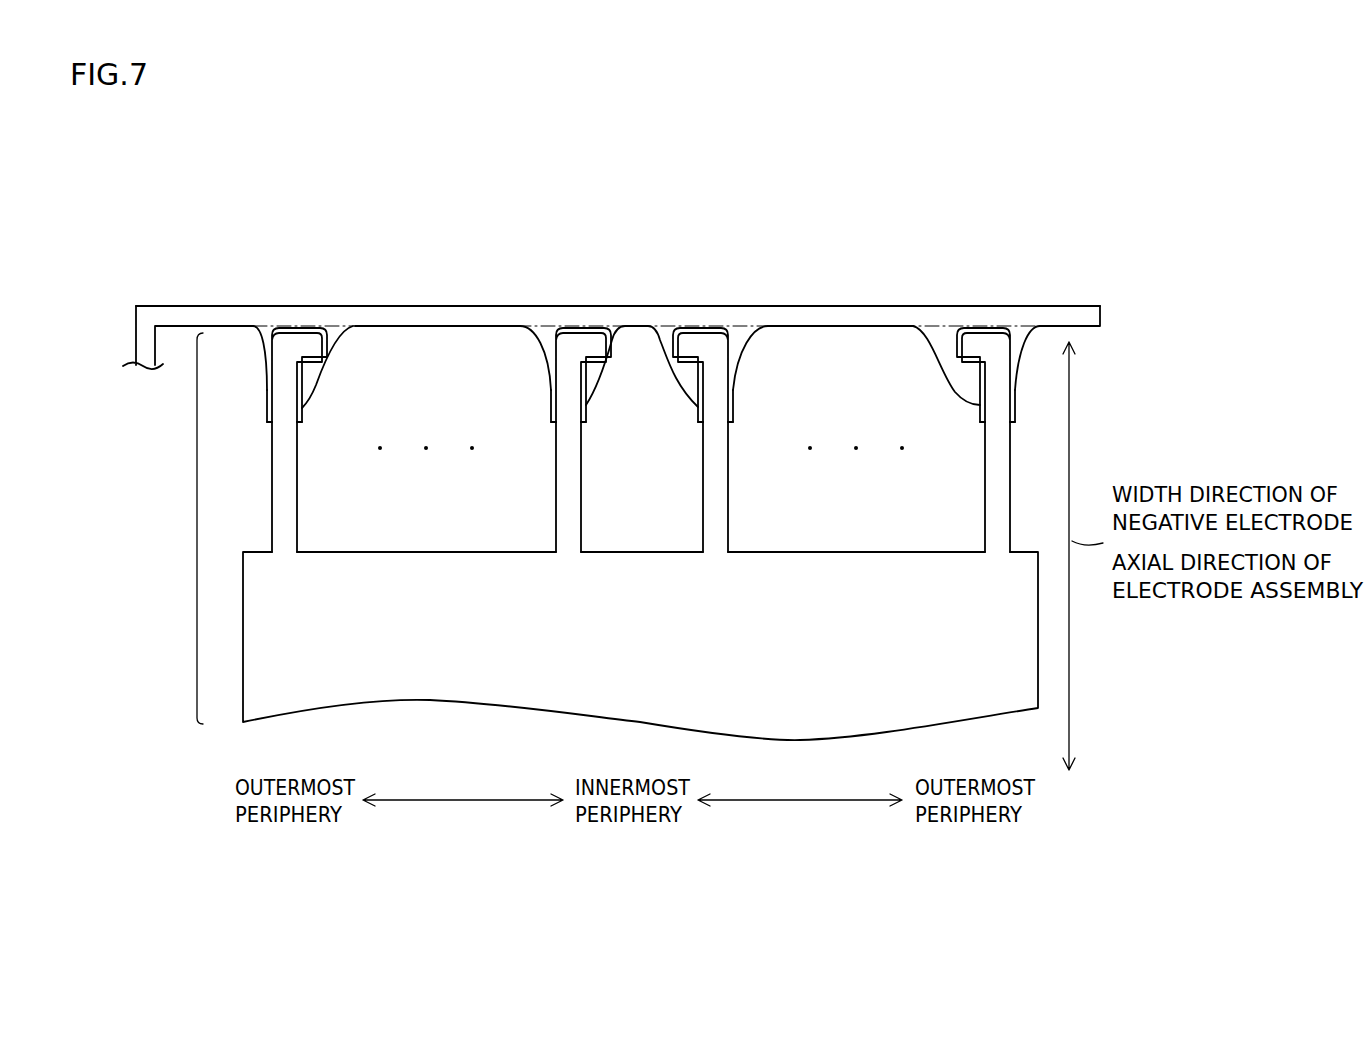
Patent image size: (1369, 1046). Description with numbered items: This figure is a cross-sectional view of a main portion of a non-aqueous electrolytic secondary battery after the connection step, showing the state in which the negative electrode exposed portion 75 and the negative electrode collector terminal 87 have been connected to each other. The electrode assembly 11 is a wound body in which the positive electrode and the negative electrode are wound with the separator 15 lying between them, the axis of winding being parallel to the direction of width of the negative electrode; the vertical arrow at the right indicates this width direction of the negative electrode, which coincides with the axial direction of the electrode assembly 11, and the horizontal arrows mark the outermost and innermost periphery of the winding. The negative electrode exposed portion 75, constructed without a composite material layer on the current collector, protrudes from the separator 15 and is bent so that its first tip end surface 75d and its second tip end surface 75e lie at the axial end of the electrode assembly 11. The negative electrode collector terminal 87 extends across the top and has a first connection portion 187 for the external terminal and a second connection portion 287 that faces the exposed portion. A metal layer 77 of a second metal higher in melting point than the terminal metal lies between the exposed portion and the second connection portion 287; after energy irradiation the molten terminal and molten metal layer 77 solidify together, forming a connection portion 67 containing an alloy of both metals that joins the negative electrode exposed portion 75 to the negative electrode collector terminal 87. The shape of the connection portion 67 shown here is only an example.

The negative electrode collector terminal 87 is at (502, 160).
The first connection portion 187 is at (145, 340).
The second connection portion 287 is at (632, 313).
The negative electrode exposed portion 75 is at (298, 486).
The first tip end surface 75d is at (353, 326).
The second tip end surface 75e is at (302, 327).
The connection portion 67 is at (322, 370).
The metal layer 77 is at (265, 420).
The separator 15 is at (460, 550).
The electrode assembly 11 is at (197, 531).